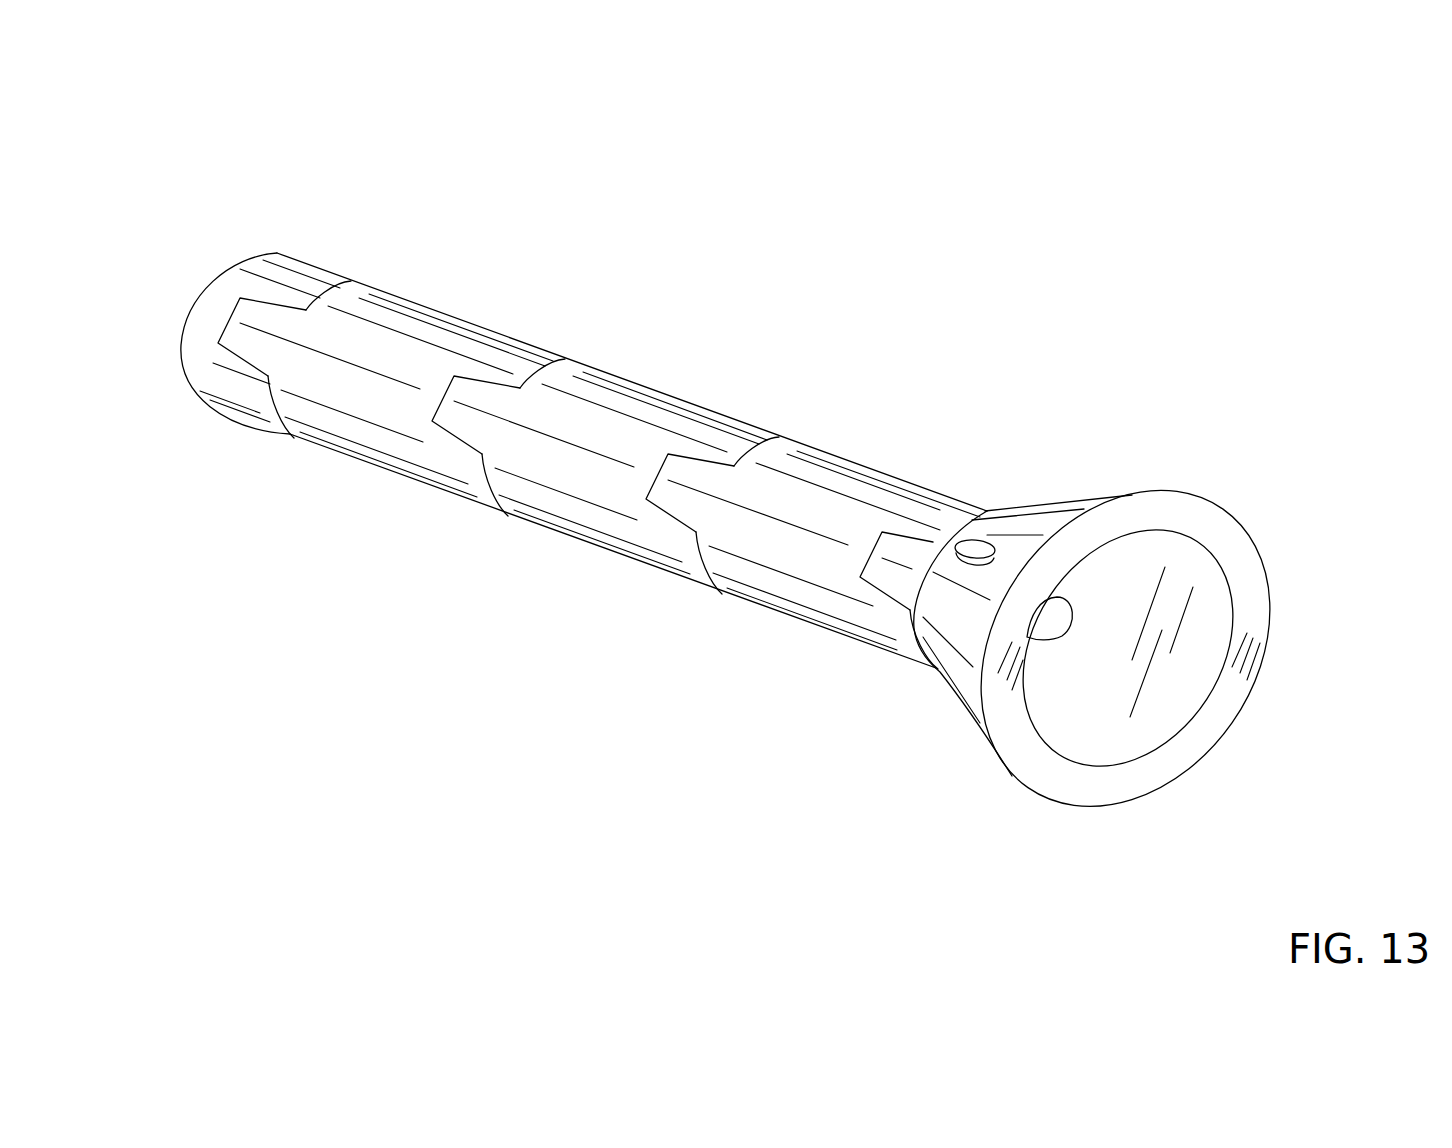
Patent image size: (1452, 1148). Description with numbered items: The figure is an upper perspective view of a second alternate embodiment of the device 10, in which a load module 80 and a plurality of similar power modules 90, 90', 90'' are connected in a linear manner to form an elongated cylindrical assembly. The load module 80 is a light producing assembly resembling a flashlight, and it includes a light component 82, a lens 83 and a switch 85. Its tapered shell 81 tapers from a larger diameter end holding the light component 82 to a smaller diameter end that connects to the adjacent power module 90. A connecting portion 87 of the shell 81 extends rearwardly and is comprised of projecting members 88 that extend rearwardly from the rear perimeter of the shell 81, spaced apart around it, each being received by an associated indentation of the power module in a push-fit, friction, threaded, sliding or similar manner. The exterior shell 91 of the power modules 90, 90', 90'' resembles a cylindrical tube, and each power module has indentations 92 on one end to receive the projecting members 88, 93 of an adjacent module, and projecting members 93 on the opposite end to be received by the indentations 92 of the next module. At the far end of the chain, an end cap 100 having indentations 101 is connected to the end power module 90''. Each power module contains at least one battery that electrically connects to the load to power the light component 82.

The device 10 is at (1153, 156).
The load module 80 is at (1190, 482).
The tapered shell 81 is at (970, 690).
The light component 82 is at (1055, 634).
The lens 83 is at (1140, 737).
The switch 85 is at (985, 545).
The connecting portion 87 is at (937, 606).
The projecting members 88 is at (890, 580).
The power module 90 is at (868, 495).
The power module 90' is at (631, 414).
The power module 90'' is at (433, 338).
The exterior shell 91 is at (767, 580).
The indentations 92 is at (853, 560).
The projecting members 93 is at (693, 477).
The end cap 100 is at (317, 270).
The indentations 101 is at (197, 313).